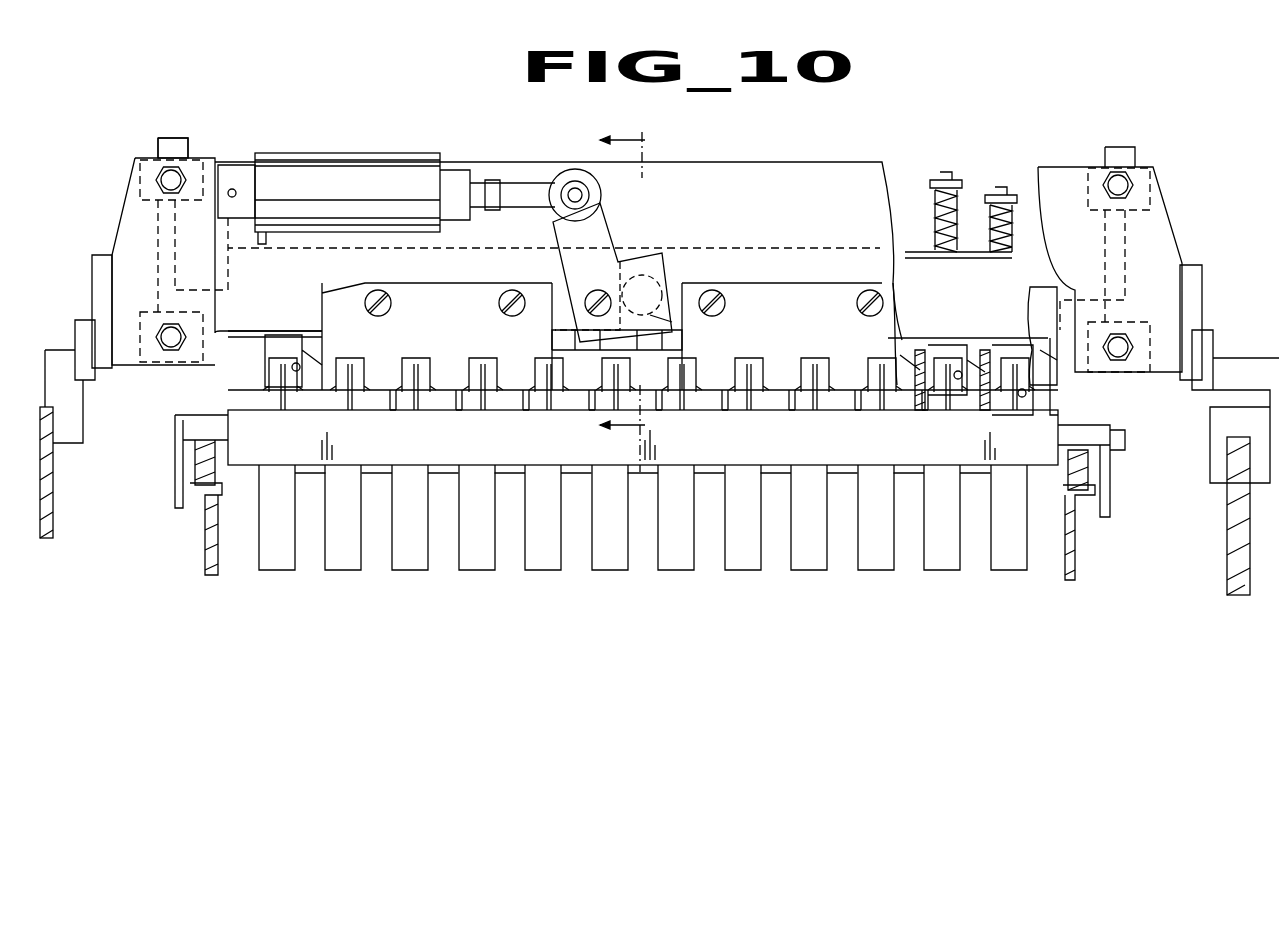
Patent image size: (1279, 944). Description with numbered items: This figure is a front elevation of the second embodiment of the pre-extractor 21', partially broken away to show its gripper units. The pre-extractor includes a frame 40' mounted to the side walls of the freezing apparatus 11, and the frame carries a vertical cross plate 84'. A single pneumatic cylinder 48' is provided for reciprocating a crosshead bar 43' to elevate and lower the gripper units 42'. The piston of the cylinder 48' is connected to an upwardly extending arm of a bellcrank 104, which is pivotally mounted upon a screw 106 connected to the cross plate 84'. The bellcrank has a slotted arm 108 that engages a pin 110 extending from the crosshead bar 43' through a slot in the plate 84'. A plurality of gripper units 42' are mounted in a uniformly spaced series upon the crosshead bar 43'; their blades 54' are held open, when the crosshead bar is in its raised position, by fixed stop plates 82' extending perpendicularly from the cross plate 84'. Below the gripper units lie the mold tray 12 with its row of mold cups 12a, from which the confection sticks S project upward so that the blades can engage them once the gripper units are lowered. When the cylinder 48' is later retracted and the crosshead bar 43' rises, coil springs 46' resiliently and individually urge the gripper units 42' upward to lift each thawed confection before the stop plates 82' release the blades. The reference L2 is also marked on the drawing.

The mold tray 12 is at (232, 410).
The mold cups 12a is at (290, 568).
The pre-extractor 21' is at (558, 245).
The frame 40' is at (87, 472).
The gripper units 42' is at (676, 379).
The crosshead bar 43' is at (847, 321).
The coil springs 46' is at (973, 205).
The pneumatic cylinder 48' is at (386, 181).
The blades 54' is at (1040, 357).
The stop plates 82' is at (643, 374).
The vertical cross plate 84' is at (561, 284).
The bellcrank 104 is at (620, 222).
The screw 106 is at (592, 290).
The slotted arm 108 is at (655, 255).
The pin 110 is at (665, 323).
The freezing apparatus 11 is at (622, 292).
The sticks S is at (290, 405).
The line L2 is at (617, 605).